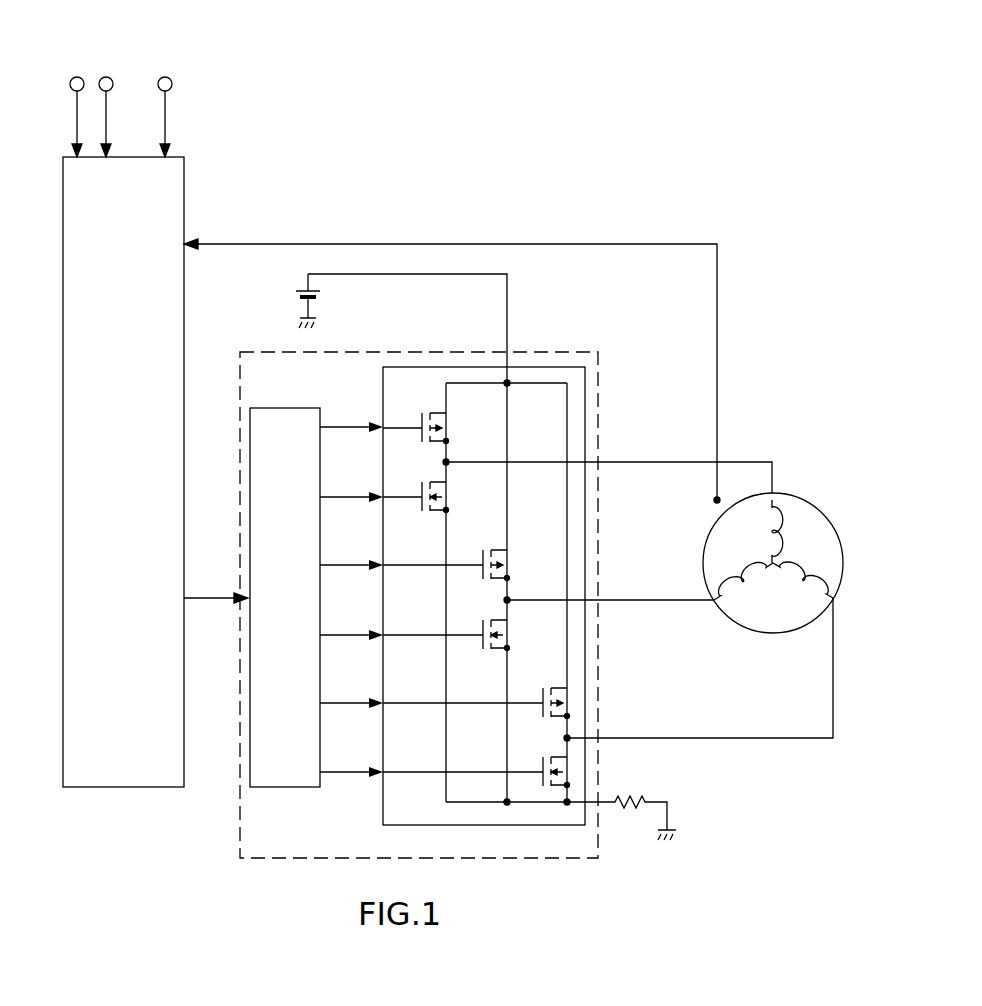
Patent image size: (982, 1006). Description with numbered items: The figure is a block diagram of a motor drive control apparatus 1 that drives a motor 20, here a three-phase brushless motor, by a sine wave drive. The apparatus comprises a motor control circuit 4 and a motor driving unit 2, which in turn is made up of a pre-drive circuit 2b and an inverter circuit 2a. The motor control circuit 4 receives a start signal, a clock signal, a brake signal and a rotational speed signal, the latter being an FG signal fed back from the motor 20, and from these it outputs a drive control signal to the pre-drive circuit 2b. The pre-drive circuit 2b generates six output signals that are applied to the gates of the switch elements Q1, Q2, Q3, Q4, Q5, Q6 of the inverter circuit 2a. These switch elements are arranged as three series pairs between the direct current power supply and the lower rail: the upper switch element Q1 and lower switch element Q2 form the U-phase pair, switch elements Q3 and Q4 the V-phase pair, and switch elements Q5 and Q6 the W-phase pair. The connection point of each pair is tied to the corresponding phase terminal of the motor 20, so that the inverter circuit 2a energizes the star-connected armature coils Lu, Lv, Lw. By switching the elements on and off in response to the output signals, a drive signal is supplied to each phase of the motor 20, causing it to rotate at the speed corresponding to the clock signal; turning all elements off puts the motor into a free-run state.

The motor drive control apparatus 1 is at (408, 34).
The motor driving unit 2 is at (443, 341).
The inverter circuit 2a is at (537, 362).
The pre-drive circuit 2b is at (293, 408).
The motor control circuit 4 is at (166, 788).
The motor 20 is at (794, 494).
The switch element Q1 is at (416, 412).
The switch element Q2 is at (416, 482).
The switch element Q3 is at (446, 550).
The switch element Q4 is at (446, 620).
The switch element Q5 is at (476, 689).
The switch element Q6 is at (476, 757).
The armature coil Lu is at (765, 522).
The armature coil Lv is at (740, 588).
The armature coil Lw is at (802, 588).